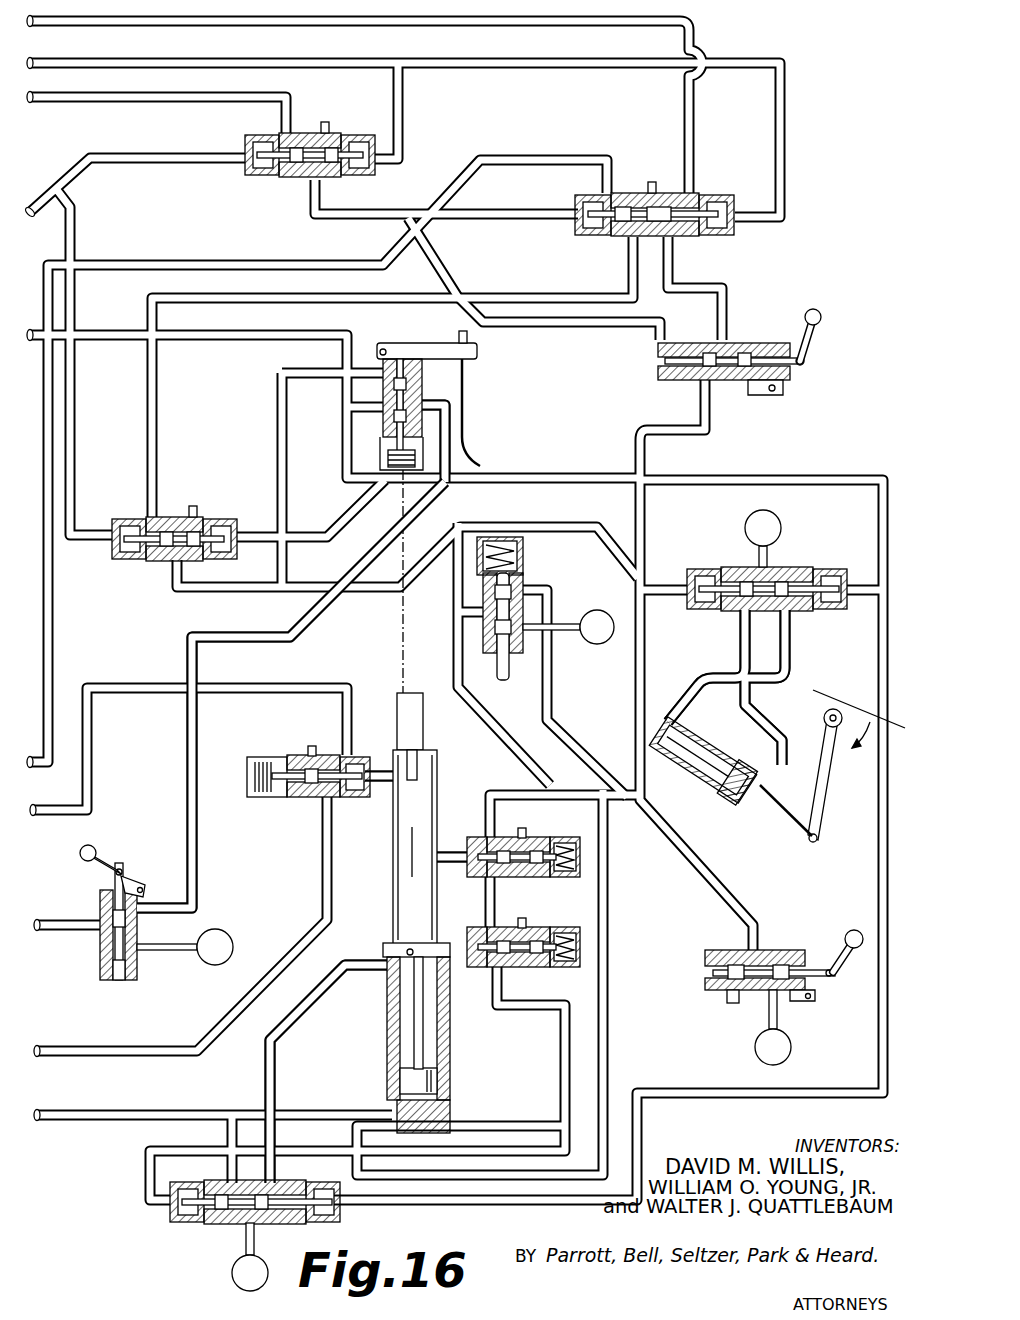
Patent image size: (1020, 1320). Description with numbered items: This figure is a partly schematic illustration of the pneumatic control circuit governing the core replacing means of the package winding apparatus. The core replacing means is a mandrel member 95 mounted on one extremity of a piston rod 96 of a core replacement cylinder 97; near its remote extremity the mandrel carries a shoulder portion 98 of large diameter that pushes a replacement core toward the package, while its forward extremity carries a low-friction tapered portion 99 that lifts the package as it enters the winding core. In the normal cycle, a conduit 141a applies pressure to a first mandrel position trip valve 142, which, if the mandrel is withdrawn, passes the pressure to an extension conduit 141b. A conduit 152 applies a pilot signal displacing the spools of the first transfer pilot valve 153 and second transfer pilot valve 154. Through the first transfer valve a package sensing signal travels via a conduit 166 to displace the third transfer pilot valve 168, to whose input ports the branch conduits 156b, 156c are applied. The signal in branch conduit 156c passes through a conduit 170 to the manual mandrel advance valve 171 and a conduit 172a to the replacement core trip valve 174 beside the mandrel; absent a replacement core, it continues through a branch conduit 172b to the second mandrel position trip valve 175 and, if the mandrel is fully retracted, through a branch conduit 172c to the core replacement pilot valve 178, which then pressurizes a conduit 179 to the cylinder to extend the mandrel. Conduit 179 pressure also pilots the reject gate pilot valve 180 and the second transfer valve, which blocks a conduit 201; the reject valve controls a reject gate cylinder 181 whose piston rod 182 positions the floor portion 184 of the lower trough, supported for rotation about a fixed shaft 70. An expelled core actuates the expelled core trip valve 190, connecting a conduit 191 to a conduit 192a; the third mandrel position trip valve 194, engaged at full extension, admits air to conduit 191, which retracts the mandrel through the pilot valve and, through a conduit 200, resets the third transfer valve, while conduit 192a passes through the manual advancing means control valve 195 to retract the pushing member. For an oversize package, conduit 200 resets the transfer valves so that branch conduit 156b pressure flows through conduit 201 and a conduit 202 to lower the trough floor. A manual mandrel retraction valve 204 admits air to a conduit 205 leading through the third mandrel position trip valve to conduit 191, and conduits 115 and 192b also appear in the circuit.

The fixed shaft 70 is at (822, 718).
The mandrel member 95 is at (393, 842).
The piston rod 96 is at (396, 1036).
The core replacement cylinder 97 is at (451, 1012).
The shoulder portion 98 is at (396, 942).
The tapered portion 99 is at (423, 717).
The conduit 115 is at (44, 77).
The conduit 141a is at (87, 788).
The extension conduit 141b is at (106, 1049).
The first mandrel position trip valve 142 is at (308, 800).
The conduit 152 is at (47, 190).
The first transfer pilot valve 153 is at (302, 130).
The second transfer pilot valve 154 is at (170, 564).
The branch conduit 156b is at (168, 250).
The branch conduit 156c is at (30, 21).
The conduit 166 is at (354, 196).
The third transfer pilot valve 168 is at (648, 181).
The conduit 170 is at (728, 283).
The manual mandrel advance valve 171 is at (738, 340).
The conduit 172a is at (706, 430).
The branch conduit 172b is at (498, 890).
The branch conduit 172c is at (523, 1008).
The replacement core trip valve 174 is at (499, 836).
The second mandrel position trip valve 175 is at (518, 974).
The core replacement pilot valve 178 is at (235, 1225).
The conduit 179 is at (264, 534).
The reject gate pilot valve 180 is at (788, 570).
The reject gate cylinder 181 is at (712, 794).
The reject gate cylinder piston rod 182 is at (790, 822).
The floor portion 184 is at (876, 708).
The expelled core trip valve 190 is at (436, 327).
The conduit 191 is at (136, 318).
The conduit 192a is at (462, 382).
The conduit 192b is at (100, 922).
The third mandrel position trip valve 194 is at (484, 622).
The advancing means control valve 195 is at (137, 928).
The conduit 200 is at (44, 42).
The conduit 201 is at (634, 263).
The conduit 202 is at (316, 352).
The manual mandrel retraction valve 204 is at (724, 948).
The conduit 205 is at (537, 583).